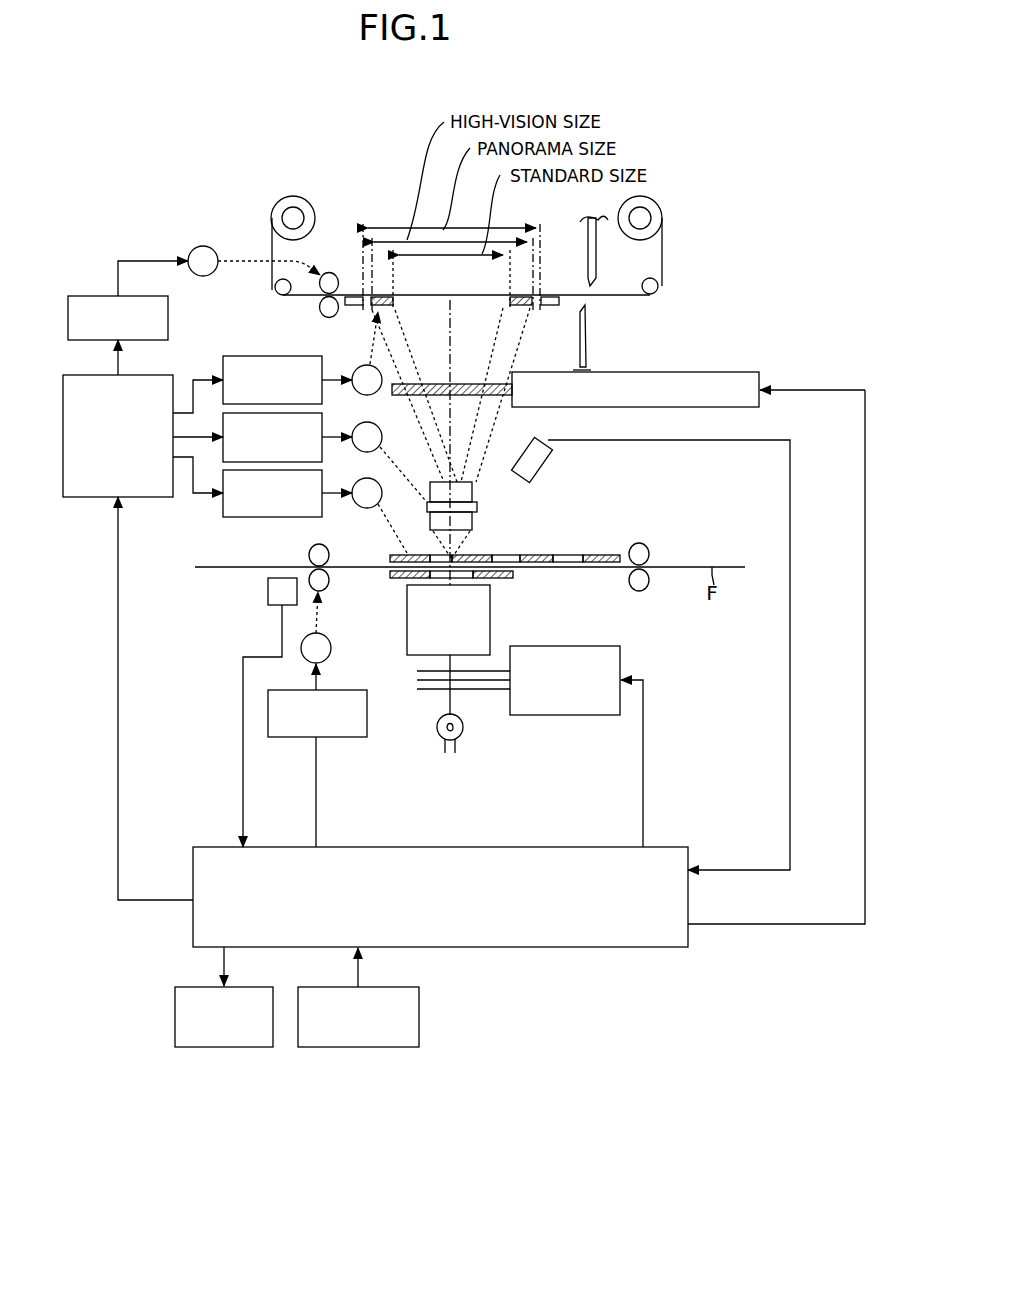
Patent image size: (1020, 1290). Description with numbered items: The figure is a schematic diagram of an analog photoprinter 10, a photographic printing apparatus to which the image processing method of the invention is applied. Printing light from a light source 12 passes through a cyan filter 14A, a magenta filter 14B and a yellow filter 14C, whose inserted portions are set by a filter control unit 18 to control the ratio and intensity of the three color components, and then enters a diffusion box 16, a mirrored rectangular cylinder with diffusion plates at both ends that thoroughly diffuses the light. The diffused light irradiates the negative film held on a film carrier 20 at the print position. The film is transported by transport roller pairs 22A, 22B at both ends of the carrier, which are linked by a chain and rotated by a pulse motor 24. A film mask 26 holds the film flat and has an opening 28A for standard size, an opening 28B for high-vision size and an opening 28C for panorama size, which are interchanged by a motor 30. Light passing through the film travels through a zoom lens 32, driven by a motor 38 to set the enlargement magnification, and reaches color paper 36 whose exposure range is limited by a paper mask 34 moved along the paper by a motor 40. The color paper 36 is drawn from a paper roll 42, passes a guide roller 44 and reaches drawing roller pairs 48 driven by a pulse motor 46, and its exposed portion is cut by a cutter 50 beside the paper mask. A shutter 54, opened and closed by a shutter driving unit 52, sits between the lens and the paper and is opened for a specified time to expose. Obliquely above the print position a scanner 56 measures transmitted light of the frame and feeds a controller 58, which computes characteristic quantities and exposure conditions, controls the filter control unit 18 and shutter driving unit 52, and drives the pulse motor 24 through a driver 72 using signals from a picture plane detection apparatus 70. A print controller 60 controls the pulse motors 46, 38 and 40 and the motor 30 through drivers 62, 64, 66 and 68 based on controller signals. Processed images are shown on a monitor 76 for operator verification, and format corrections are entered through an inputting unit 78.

The analog photoprinter 10 is at (747, 258).
The light source 12 is at (462, 735).
The cyan filter 14A is at (435, 692).
The magenta filter 14B is at (480, 692).
The yellow filter 14C is at (493, 668).
The diffusion box 16 is at (490, 608).
The filter control unit 18 is at (620, 655).
The film carrier 20 is at (388, 575).
The transport roller pair 22A is at (308, 550).
The transport roller pair 22B is at (650, 545).
The pulse motor 24 is at (332, 650).
The film mask 26 is at (592, 553).
The opening for standard size 28A is at (460, 555).
The opening for high-vision size 28B is at (505, 553).
The opening for panorama size 28C is at (570, 571).
The motor 30 is at (367, 508).
The zoom lens 32 is at (470, 481).
The paper mask 34 is at (525, 308).
The color paper 36 is at (655, 296).
The motor 38 is at (356, 425).
The motor 40 is at (356, 368).
The paper roll 42 is at (297, 197).
The guide roller 44 is at (275, 289).
The pulse motor 46 is at (203, 246).
The drawing roller pairs 48 is at (335, 273).
The cutter 50 is at (585, 245).
The shutter driving unit 52 is at (718, 372).
The shutter 54 is at (470, 383).
The scanner 56 is at (548, 460).
The controller 58 is at (452, 950).
The print controller 60 is at (78, 498).
The driver 62 is at (88, 290).
The driver 64 is at (322, 452).
The driver 66 is at (280, 355).
The driver 68 is at (238, 517).
The picture plane detection apparatus 70 is at (266, 582).
The driver 72 is at (296, 740).
The monitor 76 is at (210, 1048).
The inputting unit 78 is at (362, 1048).